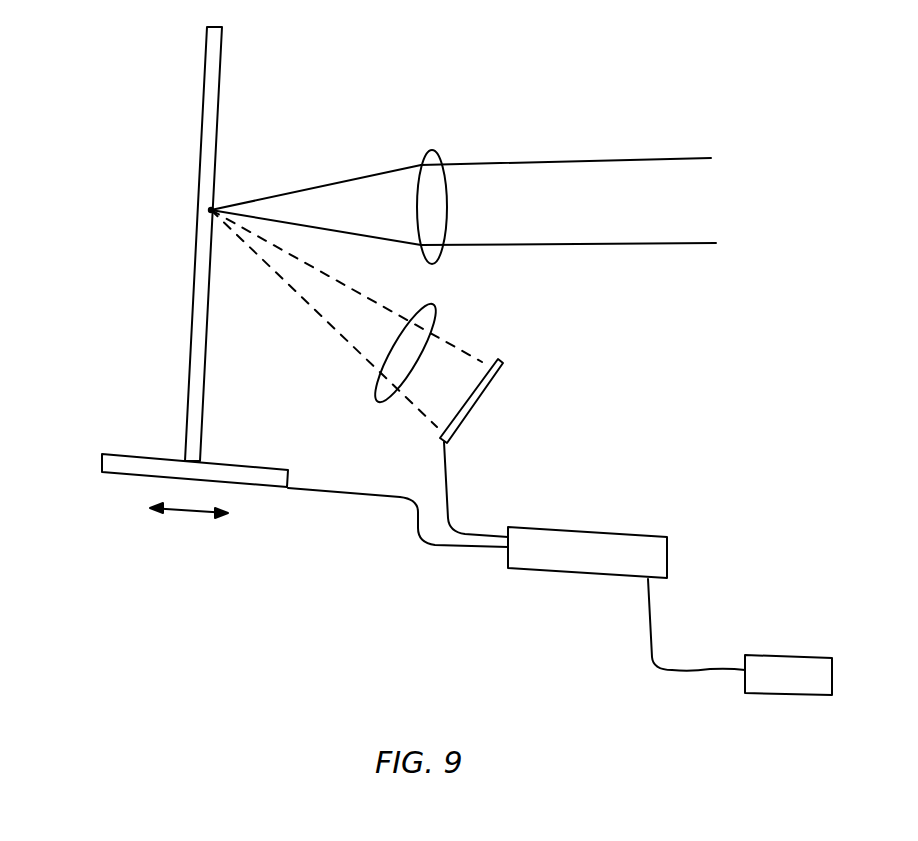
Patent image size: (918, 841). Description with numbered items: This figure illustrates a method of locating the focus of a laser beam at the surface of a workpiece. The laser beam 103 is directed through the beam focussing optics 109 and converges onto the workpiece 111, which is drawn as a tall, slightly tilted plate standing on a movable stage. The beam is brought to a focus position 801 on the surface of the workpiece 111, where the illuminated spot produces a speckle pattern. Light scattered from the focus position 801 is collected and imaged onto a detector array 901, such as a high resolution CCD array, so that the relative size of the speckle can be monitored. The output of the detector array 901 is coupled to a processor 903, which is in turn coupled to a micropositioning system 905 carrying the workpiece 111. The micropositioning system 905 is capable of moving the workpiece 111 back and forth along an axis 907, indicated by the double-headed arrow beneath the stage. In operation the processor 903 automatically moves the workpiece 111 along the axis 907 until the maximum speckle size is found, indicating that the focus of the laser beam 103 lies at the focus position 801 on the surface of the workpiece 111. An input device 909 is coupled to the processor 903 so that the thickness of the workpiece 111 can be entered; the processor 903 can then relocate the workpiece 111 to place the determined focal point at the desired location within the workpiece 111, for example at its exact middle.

The laser beam 103 is at (584, 173).
The beam focussing optics 109 is at (432, 150).
The workpiece 111 is at (213, 36).
The focus position 801 is at (212, 208).
The detector array 901 is at (500, 359).
The processor 903 is at (658, 552).
The micropositioning system 905 is at (100, 462).
The axis 907 is at (189, 523).
The input device 909 is at (813, 692).